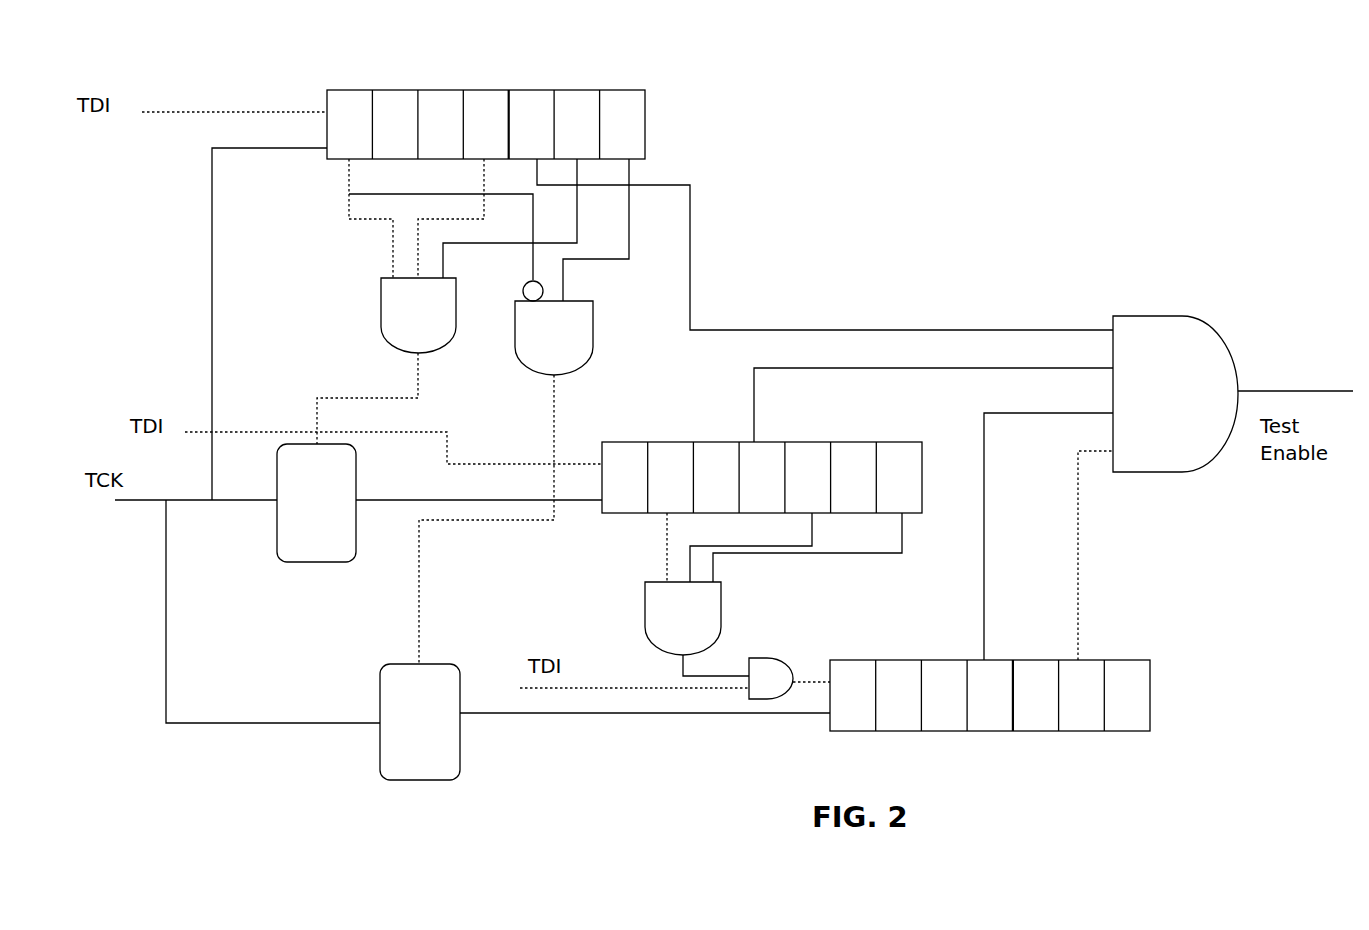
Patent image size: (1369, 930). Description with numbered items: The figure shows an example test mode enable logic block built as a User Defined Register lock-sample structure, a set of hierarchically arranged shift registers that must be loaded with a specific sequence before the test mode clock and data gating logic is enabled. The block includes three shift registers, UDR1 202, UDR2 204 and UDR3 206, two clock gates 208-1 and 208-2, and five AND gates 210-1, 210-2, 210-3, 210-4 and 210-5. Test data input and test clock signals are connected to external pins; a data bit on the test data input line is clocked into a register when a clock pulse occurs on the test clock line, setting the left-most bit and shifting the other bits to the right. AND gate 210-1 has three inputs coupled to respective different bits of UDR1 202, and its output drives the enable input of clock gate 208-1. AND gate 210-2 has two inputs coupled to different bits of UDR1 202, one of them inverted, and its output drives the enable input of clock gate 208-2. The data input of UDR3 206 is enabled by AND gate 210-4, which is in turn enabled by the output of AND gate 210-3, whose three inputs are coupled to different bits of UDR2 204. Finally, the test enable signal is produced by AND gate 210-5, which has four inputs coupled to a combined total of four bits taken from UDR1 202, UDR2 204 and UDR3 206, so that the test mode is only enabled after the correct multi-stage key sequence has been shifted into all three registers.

The UDR1 202 is at (486, 105).
The UDR2 204 is at (762, 453).
The UDR3 206 is at (990, 674).
The clock gate 208-1 is at (277, 562).
The clock gate 208-2 is at (382, 788).
The AND gate 210-1 is at (380, 317).
The AND gate 210-2 is at (523, 368).
The AND gate 210-3 is at (645, 580).
The AND gate 210-4 is at (765, 655).
The AND gate 210-5 is at (1125, 312).